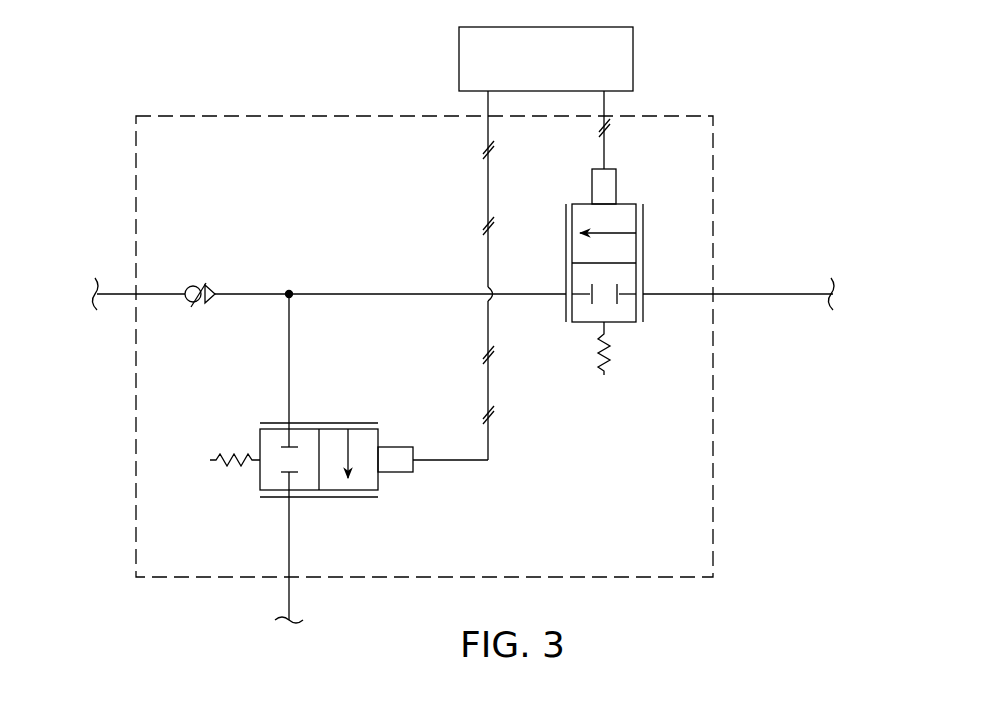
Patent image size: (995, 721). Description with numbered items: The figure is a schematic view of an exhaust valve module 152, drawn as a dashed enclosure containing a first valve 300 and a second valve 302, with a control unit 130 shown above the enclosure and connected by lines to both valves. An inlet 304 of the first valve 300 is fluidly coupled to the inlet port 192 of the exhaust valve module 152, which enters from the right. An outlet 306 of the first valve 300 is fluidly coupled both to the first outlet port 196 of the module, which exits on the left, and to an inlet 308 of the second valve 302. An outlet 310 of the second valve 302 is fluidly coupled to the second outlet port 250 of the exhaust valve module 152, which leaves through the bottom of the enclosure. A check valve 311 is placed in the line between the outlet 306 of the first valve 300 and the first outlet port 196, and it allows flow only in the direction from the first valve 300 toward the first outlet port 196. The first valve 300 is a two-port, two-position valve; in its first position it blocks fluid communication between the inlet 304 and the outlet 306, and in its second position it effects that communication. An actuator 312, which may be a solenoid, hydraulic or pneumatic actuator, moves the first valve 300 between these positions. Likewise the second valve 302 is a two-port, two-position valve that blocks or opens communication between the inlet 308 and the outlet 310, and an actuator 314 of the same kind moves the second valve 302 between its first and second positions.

The controller 130 is at (566, 71).
The exhaust valve module 152 is at (783, 157).
The inlet port 192 is at (713, 294).
The first outlet port 196 is at (136, 294).
The second outlet port 250 is at (290, 577).
The first valve 300 is at (655, 278).
The second valve 302 is at (289, 452).
The inlet 304 is at (647, 297).
The outlet 306 is at (562, 297).
The inlet 308 is at (289, 423).
The outlet 310 is at (289, 497).
The check valve 311 is at (202, 285).
The actuator 312 is at (617, 184).
The actuator 314 is at (395, 473).